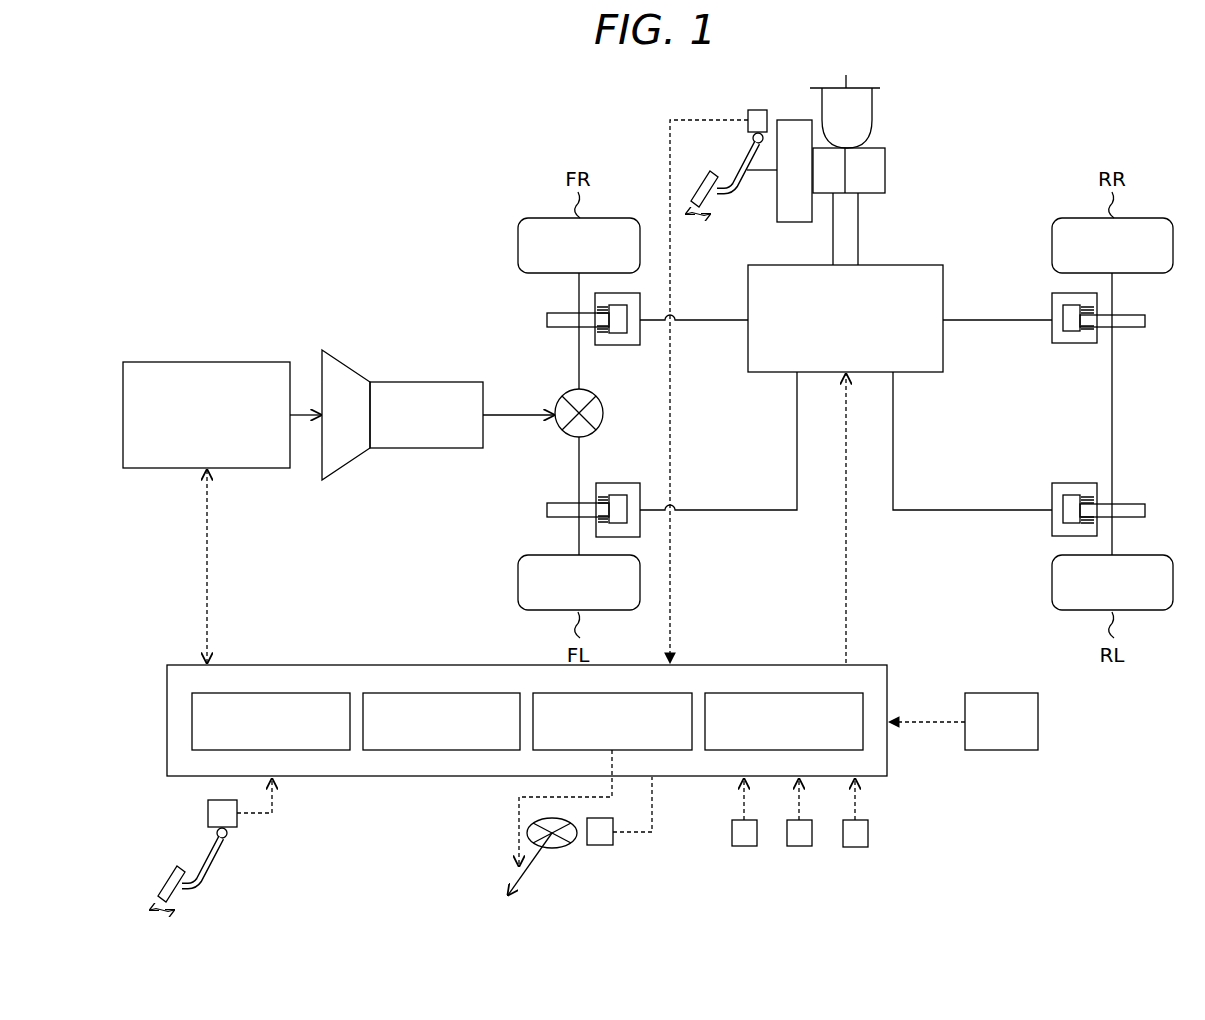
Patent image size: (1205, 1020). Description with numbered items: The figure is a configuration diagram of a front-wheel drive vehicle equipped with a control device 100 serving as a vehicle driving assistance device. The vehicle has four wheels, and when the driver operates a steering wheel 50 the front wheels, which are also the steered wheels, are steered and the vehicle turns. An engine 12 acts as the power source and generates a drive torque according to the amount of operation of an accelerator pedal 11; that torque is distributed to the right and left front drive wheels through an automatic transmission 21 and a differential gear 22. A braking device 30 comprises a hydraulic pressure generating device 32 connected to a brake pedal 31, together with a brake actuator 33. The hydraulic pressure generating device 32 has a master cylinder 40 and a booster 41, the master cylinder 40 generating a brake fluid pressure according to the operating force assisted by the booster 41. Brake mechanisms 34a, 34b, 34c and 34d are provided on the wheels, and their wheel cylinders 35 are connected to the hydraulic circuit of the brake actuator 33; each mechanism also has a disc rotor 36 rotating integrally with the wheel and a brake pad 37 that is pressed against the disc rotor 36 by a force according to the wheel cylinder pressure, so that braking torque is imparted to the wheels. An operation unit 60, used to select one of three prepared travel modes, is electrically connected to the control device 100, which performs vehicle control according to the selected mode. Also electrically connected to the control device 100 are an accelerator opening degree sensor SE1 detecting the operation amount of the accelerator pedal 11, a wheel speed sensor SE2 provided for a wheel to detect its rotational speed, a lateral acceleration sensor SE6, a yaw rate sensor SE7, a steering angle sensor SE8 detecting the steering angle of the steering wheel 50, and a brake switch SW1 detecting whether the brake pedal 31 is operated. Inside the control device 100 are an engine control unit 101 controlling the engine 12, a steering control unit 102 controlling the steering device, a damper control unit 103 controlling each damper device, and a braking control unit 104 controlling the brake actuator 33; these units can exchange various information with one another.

The accelerator pedal 11 is at (174, 876).
The engine 12 is at (140, 362).
The automatic transmission 21 is at (432, 382).
The differential gear 22 is at (604, 414).
The braking device 30 is at (996, 110).
The brake pedal 31 is at (712, 178).
The hydraulic pressure generating device 32 is at (903, 130).
The brake actuator 33 is at (910, 265).
The brake mechanism 34a is at (566, 339).
The brake mechanism 34b is at (561, 497).
The brake mechanism 34c is at (1043, 353).
The brake mechanism 34d is at (1046, 481).
The wheel cylinder 35 is at (635, 292).
The disc rotor 36 is at (549, 312).
The brake pad 37 is at (610, 334).
The master cylinder 40 is at (885, 155).
The booster 41 is at (793, 226).
The steering wheel 50 is at (527, 832).
The operation unit 60 is at (1038, 722).
The control device 100 is at (356, 665).
The engine control unit 101 is at (272, 693).
The steering control unit 102 is at (691, 693).
The damper control unit 103 is at (444, 693).
The braking control unit 104 is at (862, 693).
The accelerator opening degree sensor SE1 is at (208, 813).
The wheel speed sensor SE2 is at (855, 850).
The lateral acceleration sensor SE6 is at (799, 849).
The yaw rate sensor SE7 is at (744, 849).
The steering angle sensor SE8 is at (600, 848).
The brake switch SW1 is at (748, 112).